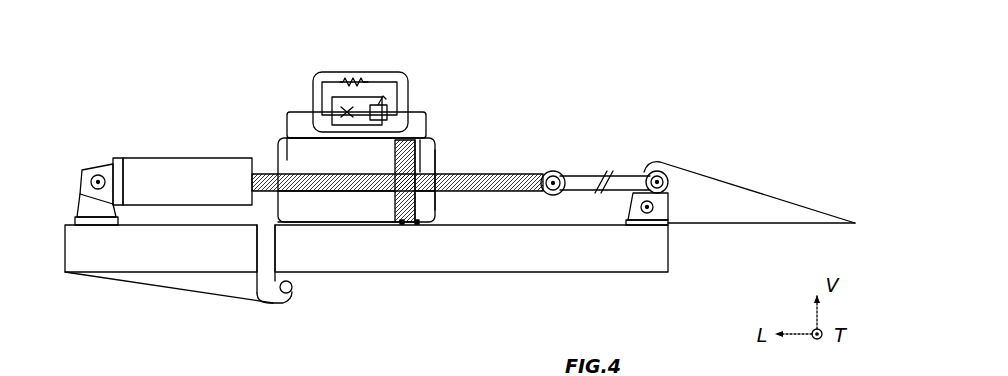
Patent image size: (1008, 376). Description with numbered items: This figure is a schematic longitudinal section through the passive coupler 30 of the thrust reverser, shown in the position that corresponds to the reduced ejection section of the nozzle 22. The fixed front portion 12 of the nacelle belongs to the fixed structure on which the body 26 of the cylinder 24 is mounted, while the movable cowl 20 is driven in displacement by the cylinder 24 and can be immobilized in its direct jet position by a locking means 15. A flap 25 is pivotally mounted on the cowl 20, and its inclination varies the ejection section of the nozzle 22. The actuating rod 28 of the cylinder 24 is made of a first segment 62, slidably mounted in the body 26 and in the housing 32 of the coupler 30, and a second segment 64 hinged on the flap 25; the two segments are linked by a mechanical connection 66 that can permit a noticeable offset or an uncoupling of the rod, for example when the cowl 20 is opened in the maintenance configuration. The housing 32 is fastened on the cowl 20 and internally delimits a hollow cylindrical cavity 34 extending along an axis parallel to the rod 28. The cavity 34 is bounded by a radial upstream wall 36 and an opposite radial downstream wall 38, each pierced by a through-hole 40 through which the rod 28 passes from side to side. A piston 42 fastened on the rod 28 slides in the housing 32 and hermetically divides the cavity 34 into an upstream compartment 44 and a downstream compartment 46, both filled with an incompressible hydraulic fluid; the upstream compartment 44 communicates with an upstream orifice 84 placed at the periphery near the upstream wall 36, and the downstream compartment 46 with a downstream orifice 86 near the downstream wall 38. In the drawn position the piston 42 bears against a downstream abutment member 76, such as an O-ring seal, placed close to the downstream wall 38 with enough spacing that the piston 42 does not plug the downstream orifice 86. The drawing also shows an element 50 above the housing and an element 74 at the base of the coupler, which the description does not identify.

The fixed front portion 12 is at (175, 265).
The locking means 15 is at (282, 306).
The cowl 20 is at (589, 267).
The nozzle 22 is at (747, 190).
The cylinder 24 is at (146, 153).
The flap 25 is at (727, 213).
The body 26 is at (187, 168).
The actuating rod 28 is at (262, 170).
The passive coupler 30 is at (451, 74).
The housing 32 is at (438, 163).
The cavity 34 is at (373, 205).
The radial upstream wall 36 is at (278, 158).
The radial downstream wall 38 is at (433, 192).
The through-hole 40 is at (279, 191).
The piston 42 is at (402, 223).
The upstream compartment 44 is at (341, 154).
The downstream compartment 46 is at (430, 139).
The control module 50 is at (366, 69).
The first segment 62 is at (511, 175).
The second segment 64 is at (623, 178).
The mechanical connection 66 is at (561, 171).
The bracket 74 is at (293, 224).
The downstream abutment member 76 is at (417, 223).
The upstream orifice 84 is at (288, 157).
The downstream orifice 86 is at (427, 156).